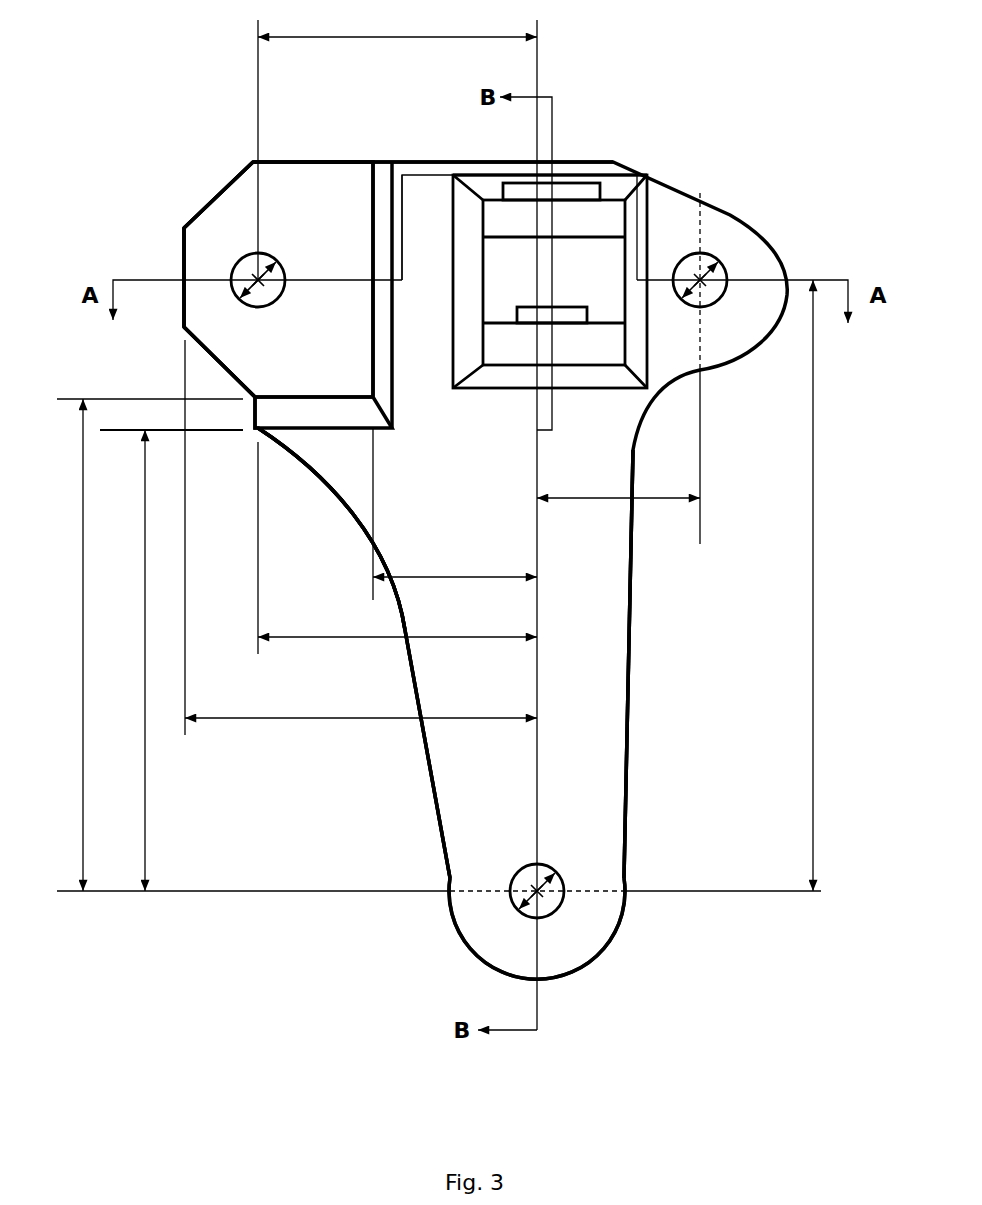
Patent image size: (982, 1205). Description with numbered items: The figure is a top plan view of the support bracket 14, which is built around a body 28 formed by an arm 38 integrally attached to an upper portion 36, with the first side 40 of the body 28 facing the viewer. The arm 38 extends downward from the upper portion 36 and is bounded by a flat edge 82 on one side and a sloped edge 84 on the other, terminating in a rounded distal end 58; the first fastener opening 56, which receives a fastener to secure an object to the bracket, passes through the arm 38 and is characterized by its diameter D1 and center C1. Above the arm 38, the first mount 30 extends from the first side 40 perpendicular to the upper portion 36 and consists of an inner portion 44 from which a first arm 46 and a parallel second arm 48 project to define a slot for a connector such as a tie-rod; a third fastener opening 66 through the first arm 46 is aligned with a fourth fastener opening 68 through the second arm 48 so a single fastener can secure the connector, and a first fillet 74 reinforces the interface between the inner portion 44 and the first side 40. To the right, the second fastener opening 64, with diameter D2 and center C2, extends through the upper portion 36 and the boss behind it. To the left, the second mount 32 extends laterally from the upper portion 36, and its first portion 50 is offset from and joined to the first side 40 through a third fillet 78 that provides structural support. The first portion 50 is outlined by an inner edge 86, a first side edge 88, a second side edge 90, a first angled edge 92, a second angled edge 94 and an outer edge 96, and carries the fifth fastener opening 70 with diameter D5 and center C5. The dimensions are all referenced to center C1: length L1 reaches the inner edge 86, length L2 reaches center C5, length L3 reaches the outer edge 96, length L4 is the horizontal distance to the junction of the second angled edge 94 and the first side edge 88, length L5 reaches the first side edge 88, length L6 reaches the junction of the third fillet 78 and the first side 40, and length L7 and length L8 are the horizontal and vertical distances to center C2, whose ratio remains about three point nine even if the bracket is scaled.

The support bracket 14 is at (378, 118).
The second mount 32 is at (288, 160).
The first angled edge 92 is at (226, 185).
The outer edge 96 is at (184, 262).
The second angled edge 94 is at (225, 368).
The first portion 50 is at (314, 249).
The second side edge 90 is at (327, 165).
The fifth fastener opening 70 is at (262, 255).
The diameter of fifth fastener opening D5 is at (250, 260).
The center of fifth fastener opening C5 is at (270, 283).
The upper portion 36 is at (420, 217).
The inner edge 86 is at (392, 332).
The first side edge 88 is at (332, 395).
The third fillet 78 is at (382, 367).
The first fillet 74 is at (463, 337).
The inner portion 44 is at (579, 284).
The first arm 46 is at (610, 220).
The second arm 48 is at (600, 348).
The third fastener opening 66 is at (587, 180).
The first mount 30 is at (572, 192).
The fourth fastener opening 68 is at (590, 306).
The second fastener opening 64 is at (725, 265).
The diameter of second fastener opening D2 is at (690, 258).
The center of second fastener opening C2 is at (700, 280).
The first side 40 is at (438, 502).
The body 28 is at (443, 450).
The arm 38 is at (465, 653).
The flat edge 82 is at (630, 738).
The sloped edge 84 is at (428, 775).
The distal end 58 is at (565, 978).
The first fastener opening 56 is at (560, 905).
The diameter of first fastener opening D1 is at (520, 880).
The center of first fastener opening C1 is at (537, 891).
The length L1 is at (472, 575).
The length L2 is at (453, 37).
The length L3 is at (297, 717).
The length L4 is at (350, 635).
The length L5 is at (83, 620).
The length L6 is at (145, 817).
The length L7 is at (585, 500).
The length L8 is at (813, 603).